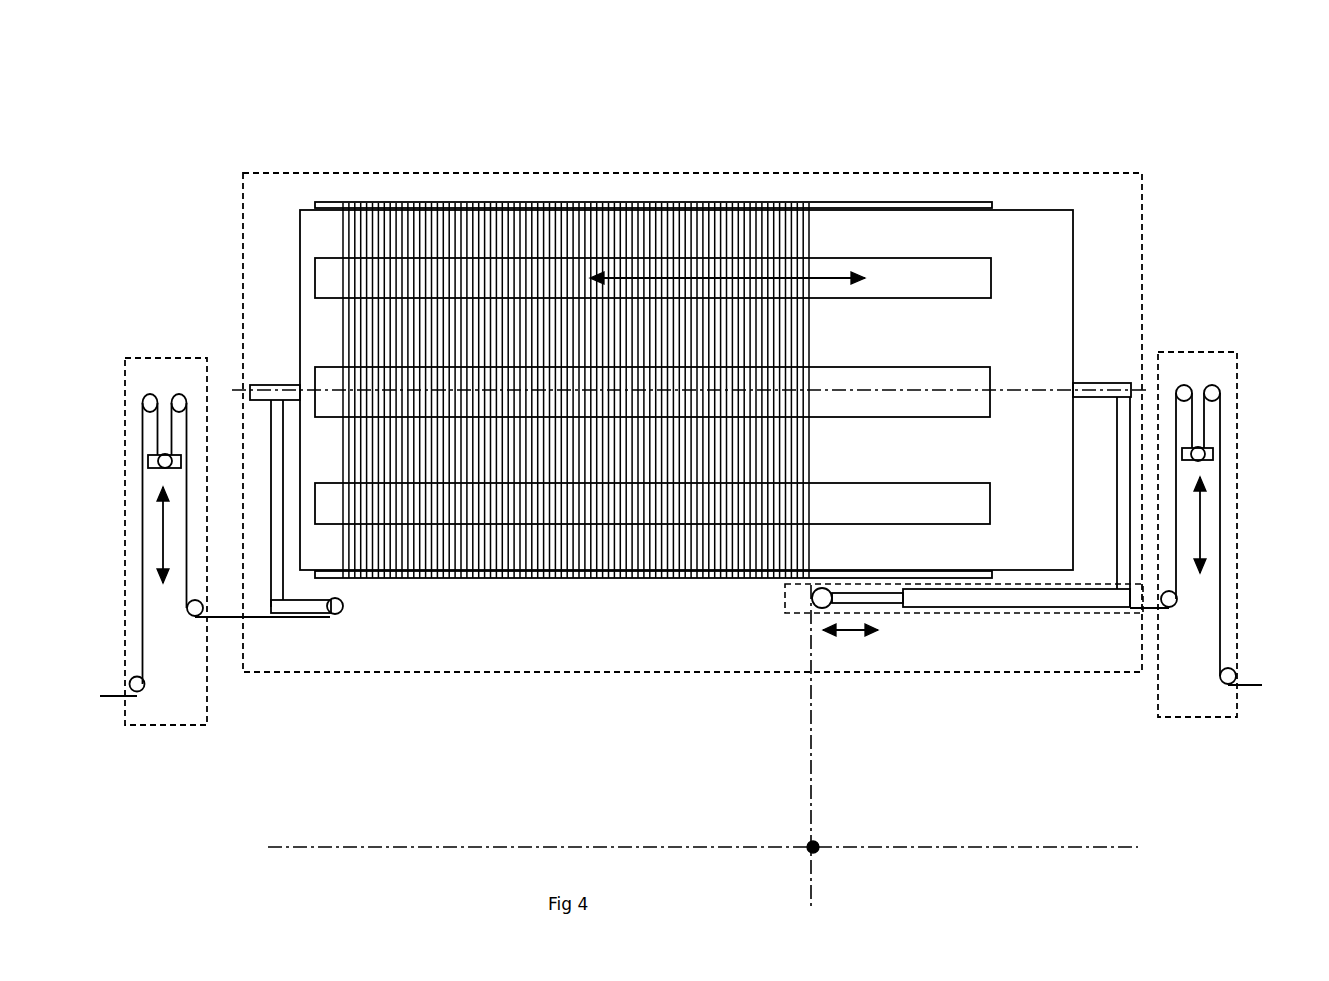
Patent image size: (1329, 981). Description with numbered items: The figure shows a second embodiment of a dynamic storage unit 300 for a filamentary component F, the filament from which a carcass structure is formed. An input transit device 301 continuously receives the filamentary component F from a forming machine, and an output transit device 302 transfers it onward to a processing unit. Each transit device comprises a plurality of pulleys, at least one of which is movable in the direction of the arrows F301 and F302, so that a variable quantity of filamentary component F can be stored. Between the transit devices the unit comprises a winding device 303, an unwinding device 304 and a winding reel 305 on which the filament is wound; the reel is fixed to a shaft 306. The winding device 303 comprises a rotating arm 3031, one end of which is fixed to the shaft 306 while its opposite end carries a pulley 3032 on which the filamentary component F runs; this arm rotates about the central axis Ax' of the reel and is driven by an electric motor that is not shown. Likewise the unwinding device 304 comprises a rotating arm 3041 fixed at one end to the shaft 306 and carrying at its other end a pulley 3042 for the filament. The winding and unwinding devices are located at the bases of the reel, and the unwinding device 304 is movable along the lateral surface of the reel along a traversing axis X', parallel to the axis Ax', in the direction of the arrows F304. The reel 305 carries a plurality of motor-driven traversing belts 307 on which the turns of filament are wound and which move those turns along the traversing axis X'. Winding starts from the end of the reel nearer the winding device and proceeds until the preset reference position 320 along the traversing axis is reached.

The dynamic storage unit 300 is at (250, 146).
The input transit device 301 is at (137, 597).
The output transit device 302 is at (1215, 581).
The winding device 303 is at (337, 593).
The rotating arm 3031 is at (283, 613).
The pulley 3032 is at (345, 608).
The unwinding device 304 is at (985, 508).
The rotating arm 3041 is at (1047, 598).
The pulley 3042 is at (812, 595).
The winding reel 305 is at (325, 235).
The shaft 306 is at (270, 385).
The traversing belts 307 is at (925, 202).
The reference position 320 is at (815, 840).
The filamentary component F is at (810, 432).
The arrow indicating movement of input transit device pulley F301 is at (163, 525).
The arrow indicating movement of output transit device pulley F302 is at (1200, 537).
The arrows indicating movement of unwinding device F304 is at (850, 631).
The central axis of the reel Ax' is at (691, 362).
The traversing axis X' is at (703, 747).